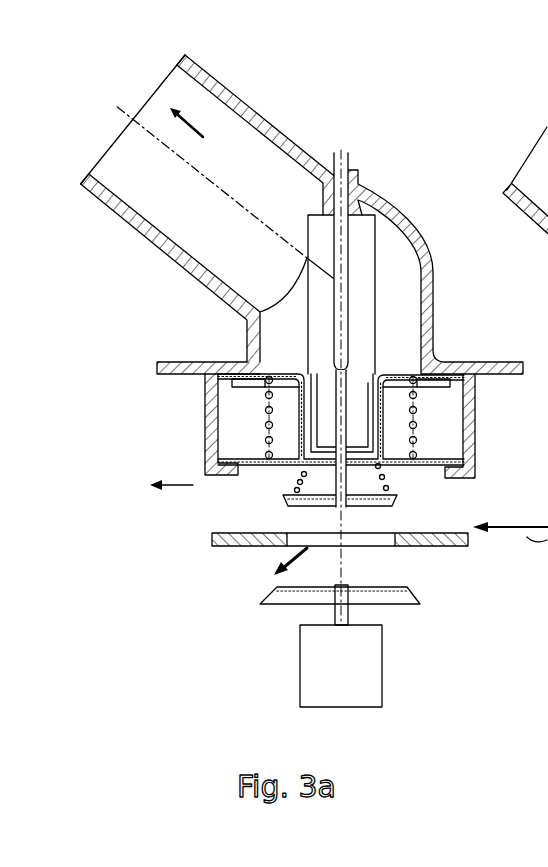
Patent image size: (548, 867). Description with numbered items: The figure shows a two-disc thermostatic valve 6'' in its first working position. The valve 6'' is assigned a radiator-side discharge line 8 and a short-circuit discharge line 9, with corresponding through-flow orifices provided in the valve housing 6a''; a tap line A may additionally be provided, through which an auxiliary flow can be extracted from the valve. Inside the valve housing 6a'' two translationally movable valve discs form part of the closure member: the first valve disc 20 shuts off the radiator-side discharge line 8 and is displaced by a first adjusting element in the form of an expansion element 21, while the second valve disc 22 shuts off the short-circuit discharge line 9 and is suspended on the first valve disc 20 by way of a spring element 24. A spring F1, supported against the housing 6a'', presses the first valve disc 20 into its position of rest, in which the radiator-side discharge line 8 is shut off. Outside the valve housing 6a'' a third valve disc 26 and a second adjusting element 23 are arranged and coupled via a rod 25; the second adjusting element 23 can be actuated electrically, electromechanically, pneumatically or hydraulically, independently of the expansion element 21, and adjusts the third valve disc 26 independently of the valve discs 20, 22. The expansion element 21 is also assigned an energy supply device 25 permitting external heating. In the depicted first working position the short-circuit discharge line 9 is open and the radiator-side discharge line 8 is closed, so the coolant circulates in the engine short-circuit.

The radiator-side discharge line 8 is at (205, 120).
The two-disc thermostatic valve 6'' is at (448, 206).
The valve housing 6a'' is at (342, 458).
The expansion element 21 is at (365, 245).
The first valve disc 20 is at (285, 372).
The spring F1 is at (265, 407).
The tap line A is at (176, 485).
The spring element 24 is at (393, 490).
The second valve disc 22 is at (293, 500).
The short-circuit discharge line 9 is at (285, 553).
The third valve disc 26 is at (420, 597).
The second adjusting element 23 is at (372, 672).
The rod 25 is at (347, 165).